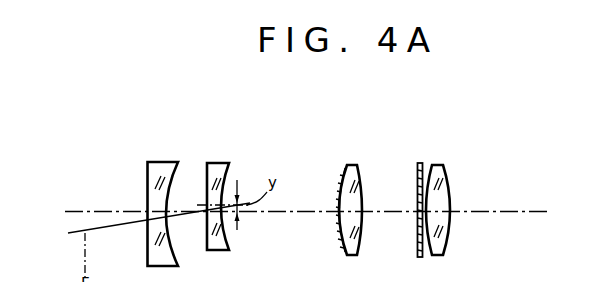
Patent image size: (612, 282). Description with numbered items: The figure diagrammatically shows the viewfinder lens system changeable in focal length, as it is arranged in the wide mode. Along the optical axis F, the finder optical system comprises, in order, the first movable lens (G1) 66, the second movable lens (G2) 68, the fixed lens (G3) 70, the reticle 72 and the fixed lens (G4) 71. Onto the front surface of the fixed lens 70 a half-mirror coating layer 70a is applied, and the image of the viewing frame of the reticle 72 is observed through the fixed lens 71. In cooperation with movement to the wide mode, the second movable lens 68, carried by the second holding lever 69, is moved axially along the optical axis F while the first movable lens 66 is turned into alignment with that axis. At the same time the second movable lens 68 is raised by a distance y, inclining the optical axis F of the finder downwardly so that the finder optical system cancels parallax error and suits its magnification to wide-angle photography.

The first movable lens (G1) 66 is at (160, 161).
The second movable lens (G2) 68 is at (220, 163).
The fixed lens (G3) 70 is at (352, 174).
The half-mirror coating layer 70a is at (342, 221).
The reticle 72 is at (422, 163).
The fixed lens (G4) 71 is at (448, 188).
The second holding lever 69 is at (343, 279).